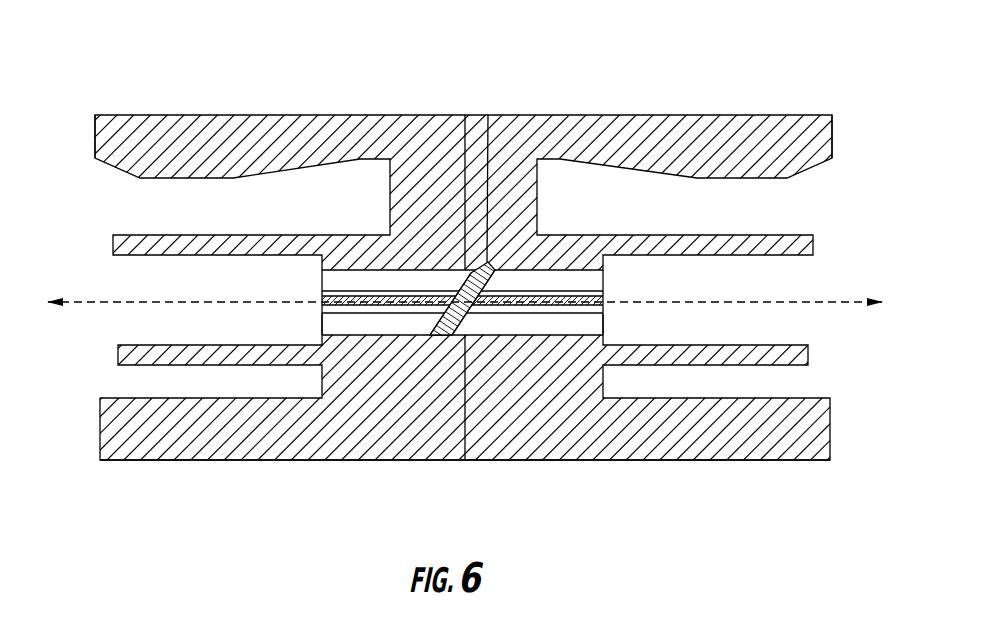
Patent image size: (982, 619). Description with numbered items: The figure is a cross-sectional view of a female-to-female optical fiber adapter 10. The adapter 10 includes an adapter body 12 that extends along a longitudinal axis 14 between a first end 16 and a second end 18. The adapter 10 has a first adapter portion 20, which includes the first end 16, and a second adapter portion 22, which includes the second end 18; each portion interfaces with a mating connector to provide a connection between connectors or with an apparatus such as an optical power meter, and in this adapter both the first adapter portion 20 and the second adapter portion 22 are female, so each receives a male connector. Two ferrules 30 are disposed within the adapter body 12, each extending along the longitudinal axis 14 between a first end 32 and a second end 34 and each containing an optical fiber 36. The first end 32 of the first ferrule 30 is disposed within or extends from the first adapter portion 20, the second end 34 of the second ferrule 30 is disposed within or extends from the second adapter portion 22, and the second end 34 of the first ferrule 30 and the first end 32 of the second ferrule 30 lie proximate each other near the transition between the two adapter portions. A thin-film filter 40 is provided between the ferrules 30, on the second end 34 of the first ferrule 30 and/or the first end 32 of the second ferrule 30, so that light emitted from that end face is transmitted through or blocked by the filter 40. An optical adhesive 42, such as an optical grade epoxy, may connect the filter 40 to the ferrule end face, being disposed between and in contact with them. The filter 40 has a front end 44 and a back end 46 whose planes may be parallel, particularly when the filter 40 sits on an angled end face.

The adapter 10 is at (360, 92).
The adapter body 12 is at (230, 114).
The longitudinal axis 14 is at (73, 302).
The first end 16 is at (95, 135).
The second end 18 is at (832, 135).
The first adapter portion 20 is at (406, 368).
The second adapter portion 22 is at (526, 365).
The ferrule 30 is at (344, 320).
The first end 32 is at (318, 323).
The second end 34 is at (609, 323).
The optical fiber 36 is at (318, 293).
The thin-film filter 40 is at (486, 268).
The optical adhesive 42 is at (458, 288).
The front end 44 is at (450, 336).
The back end 46 is at (493, 285).